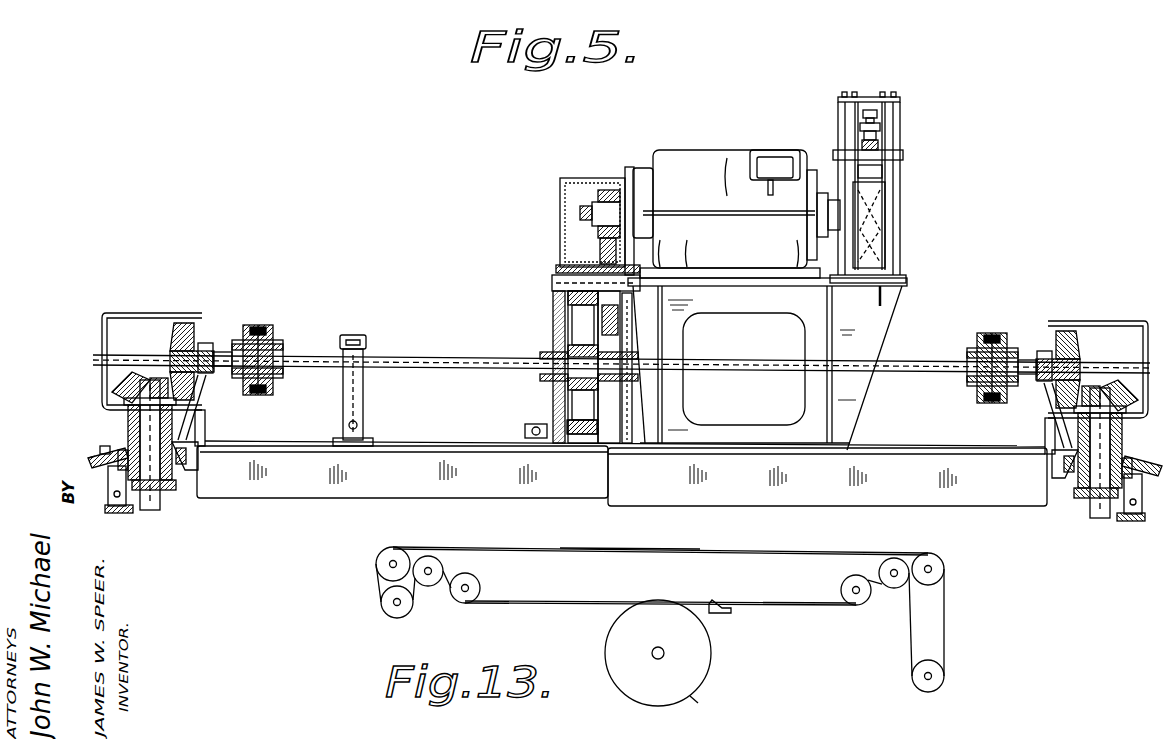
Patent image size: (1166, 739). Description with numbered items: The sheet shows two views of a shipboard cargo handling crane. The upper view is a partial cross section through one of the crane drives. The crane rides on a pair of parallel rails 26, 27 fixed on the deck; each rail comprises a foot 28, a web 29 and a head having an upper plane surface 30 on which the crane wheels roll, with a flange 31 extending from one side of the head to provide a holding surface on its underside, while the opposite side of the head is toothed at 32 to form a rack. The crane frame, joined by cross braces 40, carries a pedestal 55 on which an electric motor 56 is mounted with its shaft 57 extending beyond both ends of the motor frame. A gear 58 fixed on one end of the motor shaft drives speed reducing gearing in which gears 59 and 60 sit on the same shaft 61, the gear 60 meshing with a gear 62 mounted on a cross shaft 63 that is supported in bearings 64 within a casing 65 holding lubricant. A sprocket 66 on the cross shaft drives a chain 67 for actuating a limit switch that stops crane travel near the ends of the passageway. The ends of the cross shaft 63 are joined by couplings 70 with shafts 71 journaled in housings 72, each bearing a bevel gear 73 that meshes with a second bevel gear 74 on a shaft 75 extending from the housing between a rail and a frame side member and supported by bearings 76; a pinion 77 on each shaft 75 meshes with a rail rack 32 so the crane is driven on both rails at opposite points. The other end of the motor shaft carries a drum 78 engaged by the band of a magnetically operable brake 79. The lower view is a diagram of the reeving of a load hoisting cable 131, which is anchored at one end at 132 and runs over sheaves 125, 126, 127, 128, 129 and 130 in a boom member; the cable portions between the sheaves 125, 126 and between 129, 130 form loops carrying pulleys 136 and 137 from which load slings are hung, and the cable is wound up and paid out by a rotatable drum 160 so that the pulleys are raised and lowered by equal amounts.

In FIG. 5, the rail 26 is at (80, 461).
In FIG. 5, the rail 27 is at (1140, 527).
In FIG. 5, the foot 28 is at (120, 510).
In FIG. 5, the web 29 is at (108, 490).
In FIG. 5, the upper plane surface 30 is at (105, 447).
In FIG. 5, the flange 31 is at (92, 457).
In FIG. 5, the rack 32 is at (124, 452).
In FIG. 5, the cross brace 40 is at (515, 498).
In FIG. 5, the pedestal 55 is at (736, 318).
In FIG. 5, the electric motor 56 is at (699, 148).
In FIG. 5, the motor shaft 57 is at (590, 210).
In FIG. 5, the gear 58 is at (607, 190).
In FIG. 5, the gear 59 is at (620, 338).
In FIG. 5, the gear 60 is at (565, 268).
In FIG. 5, the shaft 61 is at (553, 283).
In FIG. 5, the gear 62 is at (592, 426).
In FIG. 5, the cross shaft 63 is at (459, 357).
In FIG. 5, the bearings 64 is at (546, 355).
In FIG. 5, the casing 65 is at (560, 196).
In FIG. 5, the sprocket 66 is at (356, 346).
In FIG. 5, the chain 67 is at (366, 405).
In FIG. 5, the coupling 70 is at (263, 326).
In FIG. 5, the shaft 71 is at (228, 352).
In FIG. 5, the housing 72 is at (173, 313).
In FIG. 5, the bevel gear 73 is at (172, 340).
In FIG. 5, the second bevel gear 74 is at (130, 388).
In FIG. 5, the shaft 75 is at (151, 512).
In FIG. 5, the bearing 76 is at (162, 505).
In FIG. 5, the pinion 77 is at (182, 470).
In FIG. 5, the drum 78 is at (890, 262).
In FIG. 5, the brake 79 is at (907, 138).
In FIG. 13, the sheave 125 is at (395, 556).
In FIG. 13, the sheave 126 is at (444, 566).
In FIG. 13, the sheave 127 is at (481, 588).
In FIG. 13, the sheave 128 is at (846, 584).
In FIG. 13, the sheave 129 is at (893, 589).
In FIG. 13, the sheave 130 is at (945, 570).
In FIG. 13, the cable 131 is at (640, 548).
In FIG. 13, the anchor 132 is at (722, 598).
In FIG. 13, the pulley 136 is at (389, 615).
In FIG. 13, the pulley 137 is at (918, 692).
In FIG. 13, the drum 160 is at (612, 673).